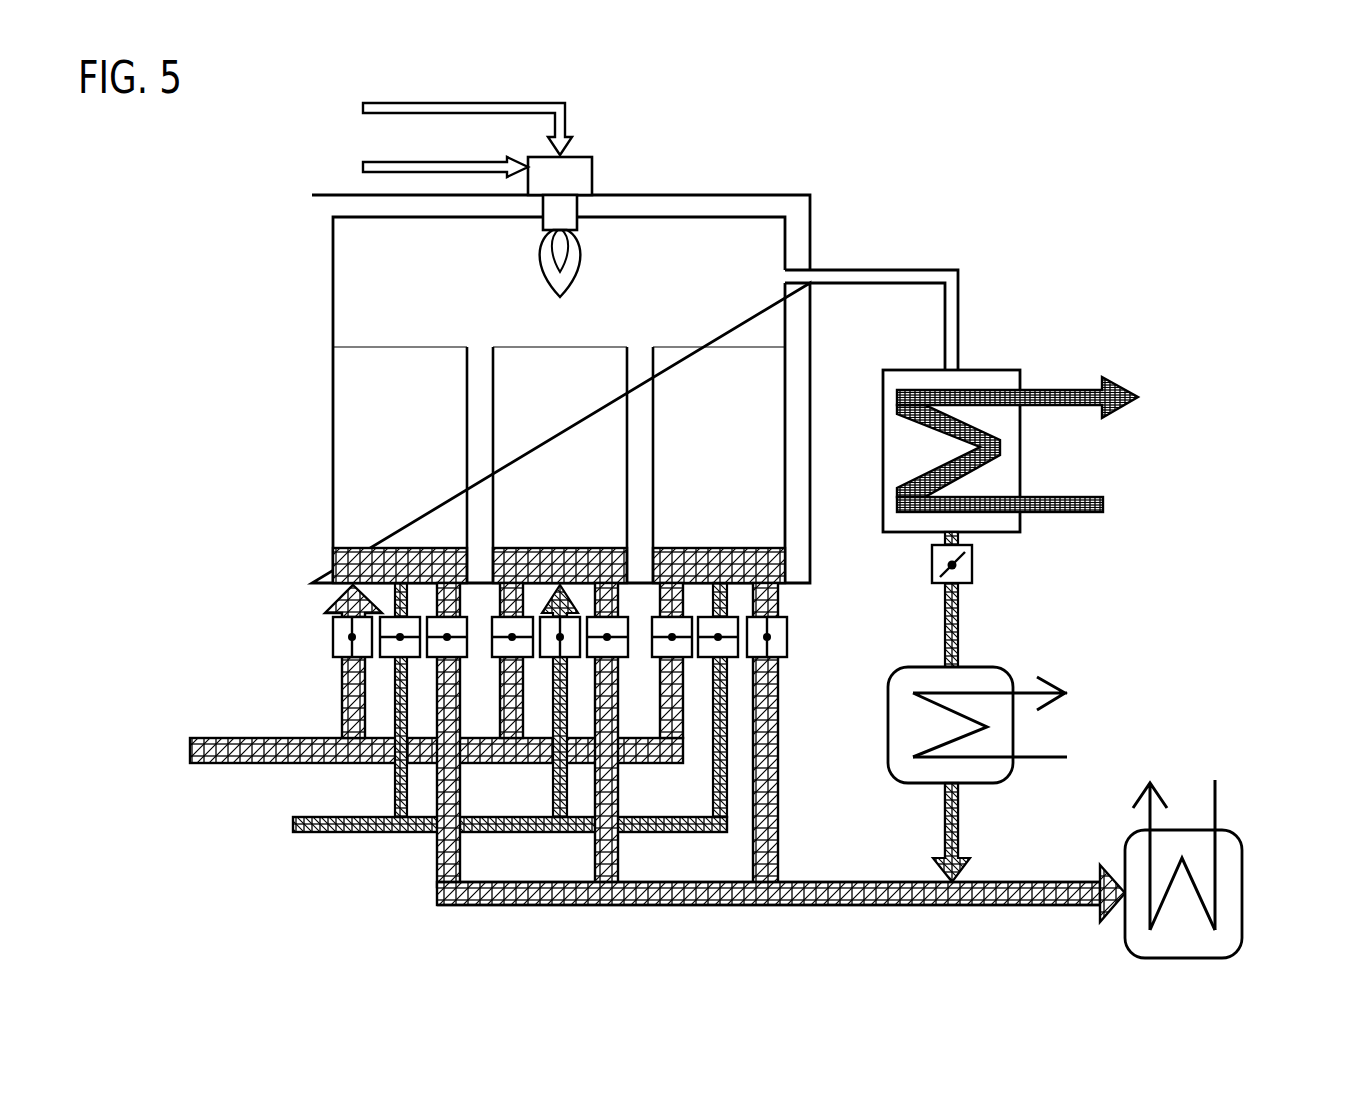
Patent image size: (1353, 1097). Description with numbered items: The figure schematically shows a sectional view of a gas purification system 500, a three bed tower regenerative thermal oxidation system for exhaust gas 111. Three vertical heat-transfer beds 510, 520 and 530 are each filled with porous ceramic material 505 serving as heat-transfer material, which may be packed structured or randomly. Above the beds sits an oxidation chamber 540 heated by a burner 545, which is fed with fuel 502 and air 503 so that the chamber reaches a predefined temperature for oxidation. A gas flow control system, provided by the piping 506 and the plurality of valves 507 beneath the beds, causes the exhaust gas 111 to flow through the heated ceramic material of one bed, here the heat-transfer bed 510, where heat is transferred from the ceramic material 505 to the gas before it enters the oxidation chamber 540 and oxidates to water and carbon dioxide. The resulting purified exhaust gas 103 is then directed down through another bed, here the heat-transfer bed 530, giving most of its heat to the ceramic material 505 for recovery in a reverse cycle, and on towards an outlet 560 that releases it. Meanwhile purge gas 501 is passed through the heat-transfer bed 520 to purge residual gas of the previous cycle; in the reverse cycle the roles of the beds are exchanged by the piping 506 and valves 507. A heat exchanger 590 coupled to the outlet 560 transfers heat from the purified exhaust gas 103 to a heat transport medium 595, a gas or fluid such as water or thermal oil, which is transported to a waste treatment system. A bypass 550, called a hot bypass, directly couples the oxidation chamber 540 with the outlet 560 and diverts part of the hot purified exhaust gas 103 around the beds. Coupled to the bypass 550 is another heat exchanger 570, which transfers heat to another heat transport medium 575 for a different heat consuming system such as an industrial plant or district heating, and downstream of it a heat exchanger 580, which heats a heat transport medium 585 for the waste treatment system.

The gas purification system 500 is at (1323, 123).
The fuel 502 is at (345, 108).
The air 503 is at (345, 167).
The burner 545 is at (593, 190).
The oxidation chamber 540 is at (345, 270).
The porous ceramic material 505 is at (345, 450).
The heat-transfer bed 510 is at (400, 340).
The heat-transfer bed 520 is at (523, 340).
The heat-transfer bed 530 is at (722, 340).
The purified exhaust gas 103 is at (877, 277).
The bypass 550 is at (960, 291).
The heat exchanger 570 is at (1000, 370).
The heat transport medium 575 is at (1107, 505).
The heat exchanger 580 is at (983, 668).
The heat transport medium 585 is at (1040, 760).
The heat exchanger 590 is at (1243, 892).
The heat transport medium 595 is at (1218, 798).
The valves 507 is at (318, 637).
The exhaust gas 111 is at (170, 751).
The purge gas 501 is at (272, 824).
The piping 506 is at (375, 850).
The outlet 560 is at (805, 907).